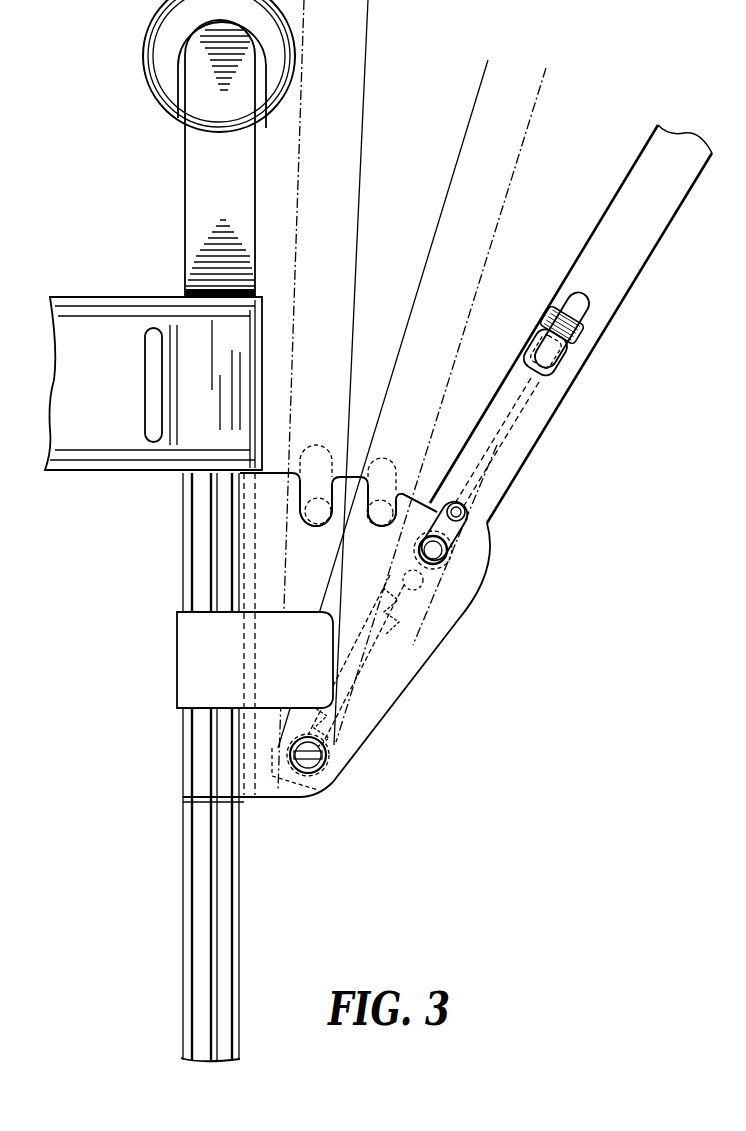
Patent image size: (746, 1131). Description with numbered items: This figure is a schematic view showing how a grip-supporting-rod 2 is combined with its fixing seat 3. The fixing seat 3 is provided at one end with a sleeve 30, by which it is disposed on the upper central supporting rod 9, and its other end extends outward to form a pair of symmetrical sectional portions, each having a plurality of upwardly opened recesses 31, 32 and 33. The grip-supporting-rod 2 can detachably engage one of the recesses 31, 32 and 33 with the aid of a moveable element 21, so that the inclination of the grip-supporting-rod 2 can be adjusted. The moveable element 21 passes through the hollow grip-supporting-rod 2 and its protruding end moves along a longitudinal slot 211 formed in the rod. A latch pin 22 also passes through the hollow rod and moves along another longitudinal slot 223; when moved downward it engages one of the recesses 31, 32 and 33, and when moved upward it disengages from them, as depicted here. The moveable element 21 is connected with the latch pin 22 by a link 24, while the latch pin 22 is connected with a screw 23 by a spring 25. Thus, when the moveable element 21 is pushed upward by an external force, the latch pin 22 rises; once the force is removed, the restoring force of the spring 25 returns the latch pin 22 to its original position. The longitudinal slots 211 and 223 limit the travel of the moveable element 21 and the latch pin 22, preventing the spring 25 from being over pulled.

The grip-supporting-rod 2 is at (632, 287).
The longitudinal slot 211 is at (587, 307).
The moveable element 21 is at (553, 377).
The link 24 is at (513, 420).
The longitudinal slot 223 is at (468, 508).
The latch pin 22 is at (447, 556).
The fixing seat 3 is at (453, 618).
The spring 25 is at (383, 647).
The screw 23 is at (333, 752).
The sleeve 30 is at (185, 688).
The upper central supporting rod 9 is at (187, 752).
The recess 31 is at (427, 533).
The recess 32 is at (368, 520).
The recess 33 is at (305, 503).